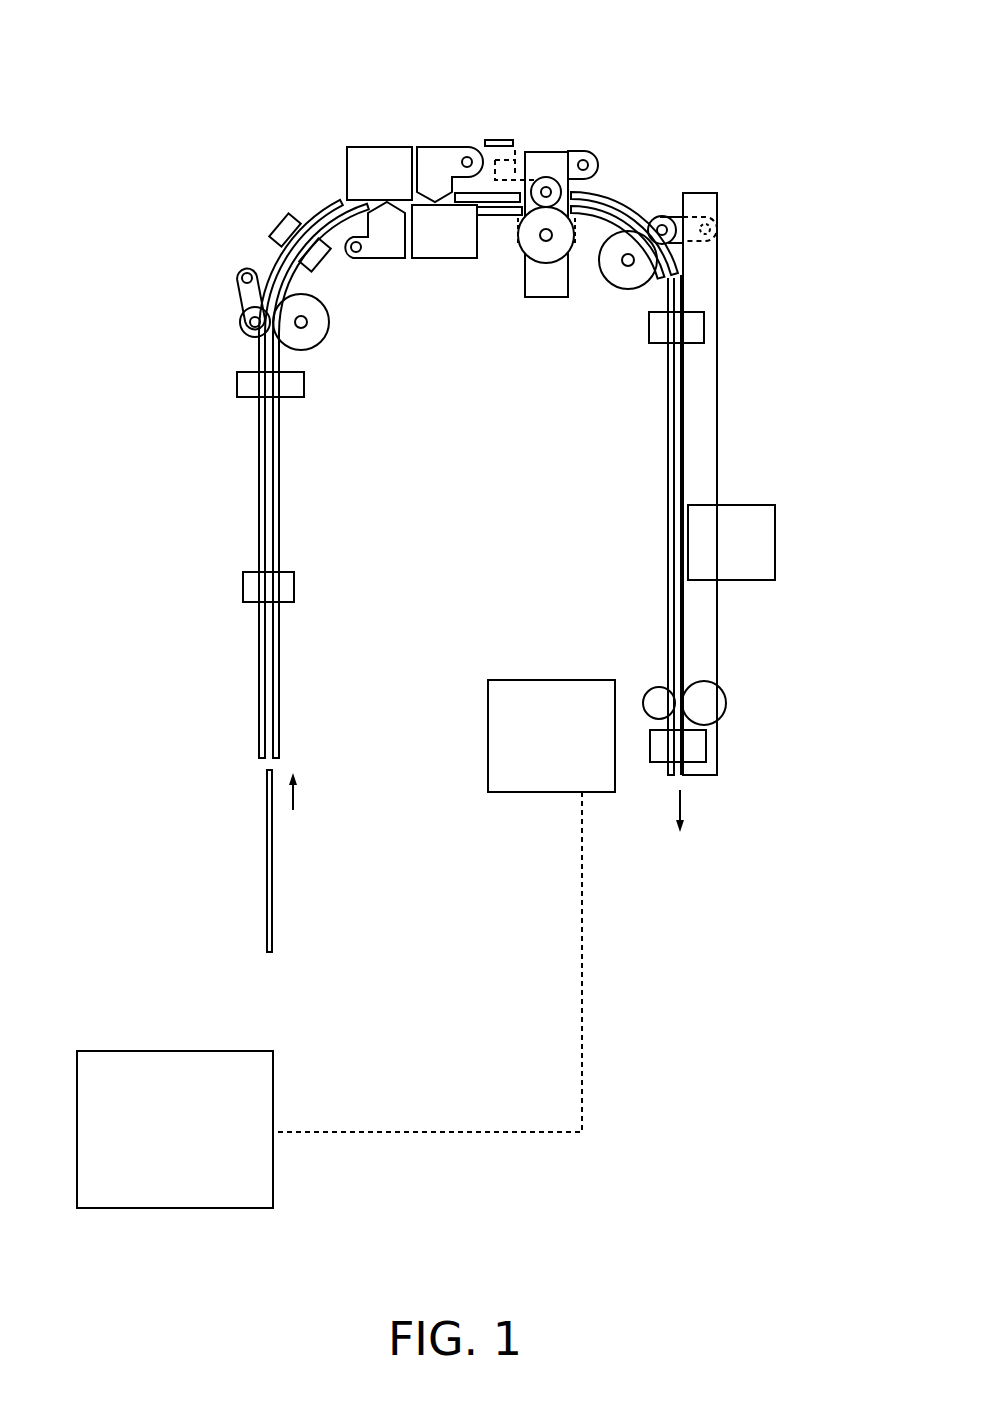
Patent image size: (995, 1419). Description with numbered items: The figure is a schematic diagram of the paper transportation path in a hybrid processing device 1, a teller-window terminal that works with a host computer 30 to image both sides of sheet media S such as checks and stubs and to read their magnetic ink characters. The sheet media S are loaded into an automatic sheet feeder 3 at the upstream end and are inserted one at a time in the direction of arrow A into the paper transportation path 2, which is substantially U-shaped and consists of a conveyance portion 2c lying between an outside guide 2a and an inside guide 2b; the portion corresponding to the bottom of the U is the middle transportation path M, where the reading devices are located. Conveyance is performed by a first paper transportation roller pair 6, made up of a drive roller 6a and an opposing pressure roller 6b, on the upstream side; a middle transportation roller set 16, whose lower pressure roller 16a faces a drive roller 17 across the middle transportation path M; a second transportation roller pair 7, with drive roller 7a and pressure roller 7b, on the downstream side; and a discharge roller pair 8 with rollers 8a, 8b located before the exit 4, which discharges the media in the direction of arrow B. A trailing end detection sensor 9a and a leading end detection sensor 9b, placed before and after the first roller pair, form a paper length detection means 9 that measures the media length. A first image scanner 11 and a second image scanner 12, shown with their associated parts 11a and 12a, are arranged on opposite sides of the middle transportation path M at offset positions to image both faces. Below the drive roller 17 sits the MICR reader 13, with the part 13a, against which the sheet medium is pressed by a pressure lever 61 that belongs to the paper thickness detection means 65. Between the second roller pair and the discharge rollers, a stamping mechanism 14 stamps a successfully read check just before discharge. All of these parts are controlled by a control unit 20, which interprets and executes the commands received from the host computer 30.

The hybrid processing device 1 is at (658, 182).
The paper transportation path 2 is at (172, 402).
The outside guide 2a is at (268, 406).
The inside guide 2b is at (263, 464).
The conveyance portion 2c is at (274, 434).
The automatic sheet feeder 3 is at (294, 558).
The exit 4 is at (693, 795).
The first paper transportation roller pair 6 is at (336, 336).
The drive roller 6a is at (318, 326).
The pressure roller 6b is at (263, 345).
The second transportation roller pair 7 is at (646, 305).
The drive roller 7a is at (620, 288).
The pressure roller 7b is at (655, 262).
The discharge roller pair 8 is at (736, 730).
The discharge roller 8a is at (662, 720).
The discharge roller 8b is at (727, 707).
The paper length detection means 9 is at (211, 297).
The trailing end detection sensor 9a is at (237, 383).
The leading end detection sensor 9b is at (272, 220).
The first image scanner 11 is at (373, 163).
The head holder 11a is at (387, 257).
The second image scanner 12 is at (452, 258).
The head holder 12a is at (437, 163).
The MICR reader 13 is at (540, 297).
The platen support 13a is at (577, 160).
The stamping mechanism 14 is at (757, 557).
The middle transportation roller set 16 is at (591, 112).
The lower pressure roller 16a is at (570, 136).
The drive roller 17 is at (590, 150).
The control unit 20 is at (577, 680).
The host computer 30 is at (150, 1051).
The pressure lever 61 is at (515, 150).
The paper thickness detection means 65 is at (492, 140).
The middle transportation path M is at (607, 198).
The sheet media S is at (272, 860).
The arrow A is at (305, 793).
The arrow B is at (667, 811).